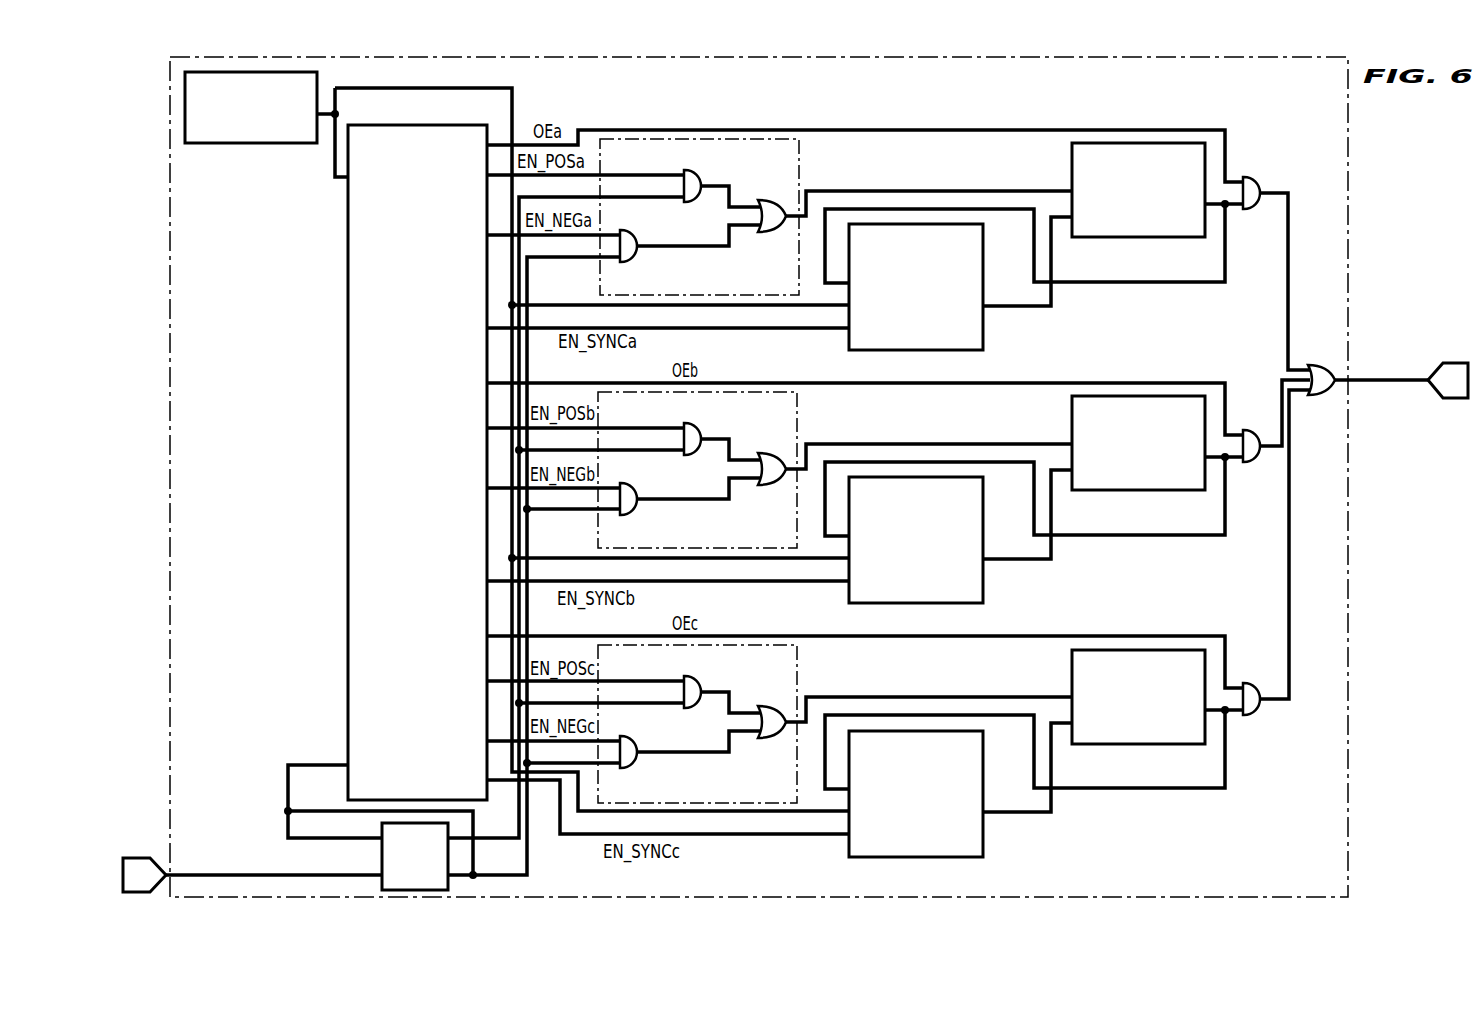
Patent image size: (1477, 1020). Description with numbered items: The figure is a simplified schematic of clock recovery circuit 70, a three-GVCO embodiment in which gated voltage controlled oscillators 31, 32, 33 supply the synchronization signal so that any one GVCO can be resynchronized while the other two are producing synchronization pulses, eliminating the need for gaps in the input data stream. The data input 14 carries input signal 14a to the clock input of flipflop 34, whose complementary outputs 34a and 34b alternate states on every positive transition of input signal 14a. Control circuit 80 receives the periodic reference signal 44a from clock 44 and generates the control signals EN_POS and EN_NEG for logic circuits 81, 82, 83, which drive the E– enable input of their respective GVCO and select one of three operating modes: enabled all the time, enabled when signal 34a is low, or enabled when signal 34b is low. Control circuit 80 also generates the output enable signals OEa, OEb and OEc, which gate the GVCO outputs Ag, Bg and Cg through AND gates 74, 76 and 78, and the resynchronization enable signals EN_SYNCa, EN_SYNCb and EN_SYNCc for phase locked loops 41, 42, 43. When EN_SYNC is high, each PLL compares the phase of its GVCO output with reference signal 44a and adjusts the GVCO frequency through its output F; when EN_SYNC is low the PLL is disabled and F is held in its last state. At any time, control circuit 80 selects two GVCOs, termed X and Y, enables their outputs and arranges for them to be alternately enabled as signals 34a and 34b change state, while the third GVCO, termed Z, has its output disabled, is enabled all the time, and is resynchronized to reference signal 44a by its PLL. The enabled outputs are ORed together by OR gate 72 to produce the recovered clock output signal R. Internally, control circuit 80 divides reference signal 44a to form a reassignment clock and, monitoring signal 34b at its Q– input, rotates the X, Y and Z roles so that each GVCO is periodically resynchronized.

The data input terminal 14 is at (144, 875).
The input signal 14a is at (274, 863).
The GVCO 31 is at (1072, 182).
The GVCO 32 is at (1072, 435).
The GVCO 33 is at (1072, 689).
The flipflop 34 is at (382, 864).
The signal 34a is at (566, 519).
The signal 34b is at (452, 568).
The PLL 41 is at (983, 336).
The PLL 42 is at (983, 588).
The PLL 43 is at (983, 842).
The clock 44 is at (268, 145).
The periodic reference signal 44a is at (583, 435).
The circuit 70 is at (1348, 132).
The OR gate 72 is at (1312, 365).
The AND gate 74 is at (1258, 177).
The AND gate 76 is at (1250, 438).
The AND gate 78 is at (1258, 688).
The control circuit 80 is at (348, 368).
The logic circuit 81 is at (799, 162).
The logic circuit 82 is at (797, 413).
The logic circuit 83 is at (797, 675).